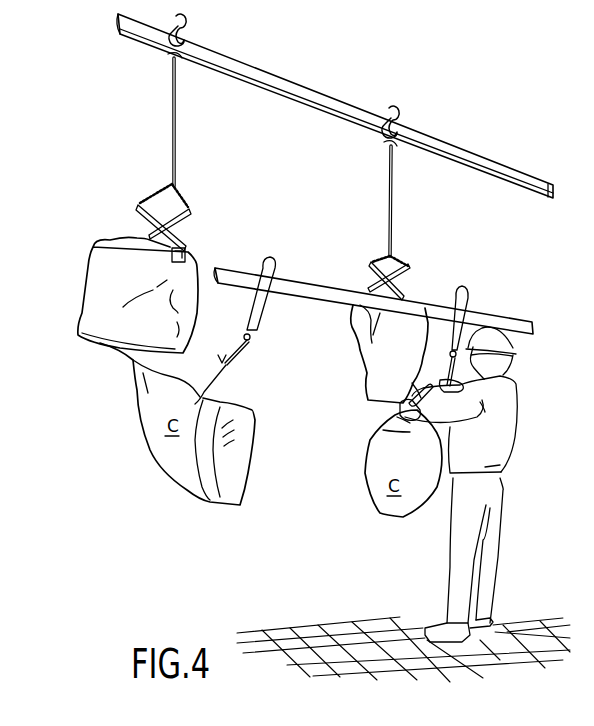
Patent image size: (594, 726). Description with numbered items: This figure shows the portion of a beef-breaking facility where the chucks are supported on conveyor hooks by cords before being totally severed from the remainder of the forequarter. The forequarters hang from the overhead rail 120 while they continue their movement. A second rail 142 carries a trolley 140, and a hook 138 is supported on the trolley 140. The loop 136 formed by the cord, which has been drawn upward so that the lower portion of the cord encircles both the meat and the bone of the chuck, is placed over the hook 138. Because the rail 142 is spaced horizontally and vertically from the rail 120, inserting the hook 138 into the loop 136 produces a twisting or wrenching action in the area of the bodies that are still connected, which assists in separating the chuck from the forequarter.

The rail 120 is at (353, 106).
The rail 142 is at (297, 289).
The loop 136 is at (224, 366).
The trolley 140 is at (470, 304).
The hook 138 is at (463, 398).